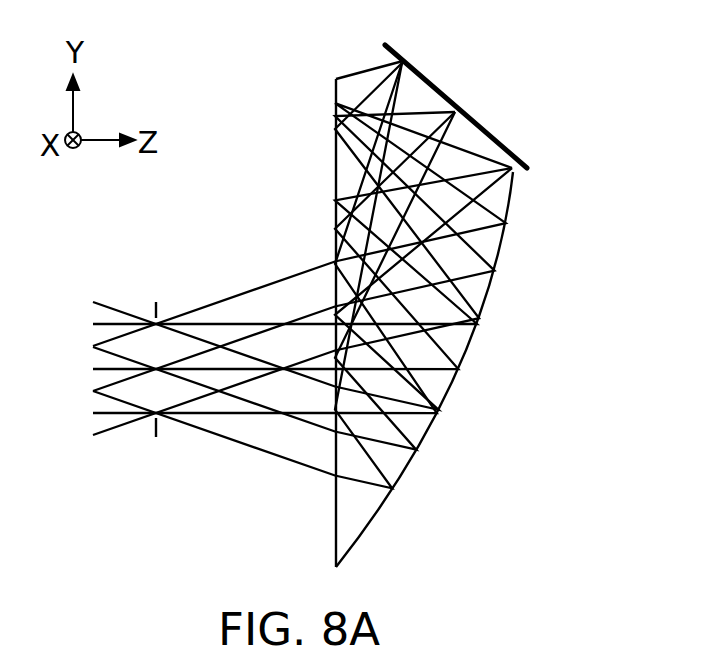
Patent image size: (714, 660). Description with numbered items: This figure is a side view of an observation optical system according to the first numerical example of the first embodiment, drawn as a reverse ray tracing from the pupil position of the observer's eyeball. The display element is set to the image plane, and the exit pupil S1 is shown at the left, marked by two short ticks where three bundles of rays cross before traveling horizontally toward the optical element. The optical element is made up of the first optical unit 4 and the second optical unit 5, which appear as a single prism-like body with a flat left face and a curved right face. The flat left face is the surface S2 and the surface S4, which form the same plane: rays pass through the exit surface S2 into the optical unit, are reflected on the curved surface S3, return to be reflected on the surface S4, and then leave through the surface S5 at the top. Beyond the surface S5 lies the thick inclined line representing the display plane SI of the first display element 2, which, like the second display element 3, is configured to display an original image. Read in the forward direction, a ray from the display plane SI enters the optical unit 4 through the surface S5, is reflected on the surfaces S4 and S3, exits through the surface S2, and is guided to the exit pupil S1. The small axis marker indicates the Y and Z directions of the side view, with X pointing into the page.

The exit pupil S1 is at (156, 437).
The exit surface S2 is at (268, 330).
The reflecting surface S4 is at (332, 525).
The reflecting surface S3 is at (374, 517).
The entrance surface S5 is at (351, 42).
The display plane SI is at (486, 132).
The second display element 3 is at (483, 89).
The first display element 2 is at (483, 89).
The second optical unit 5 is at (353, 293).
The first optical unit 4 is at (353, 293).